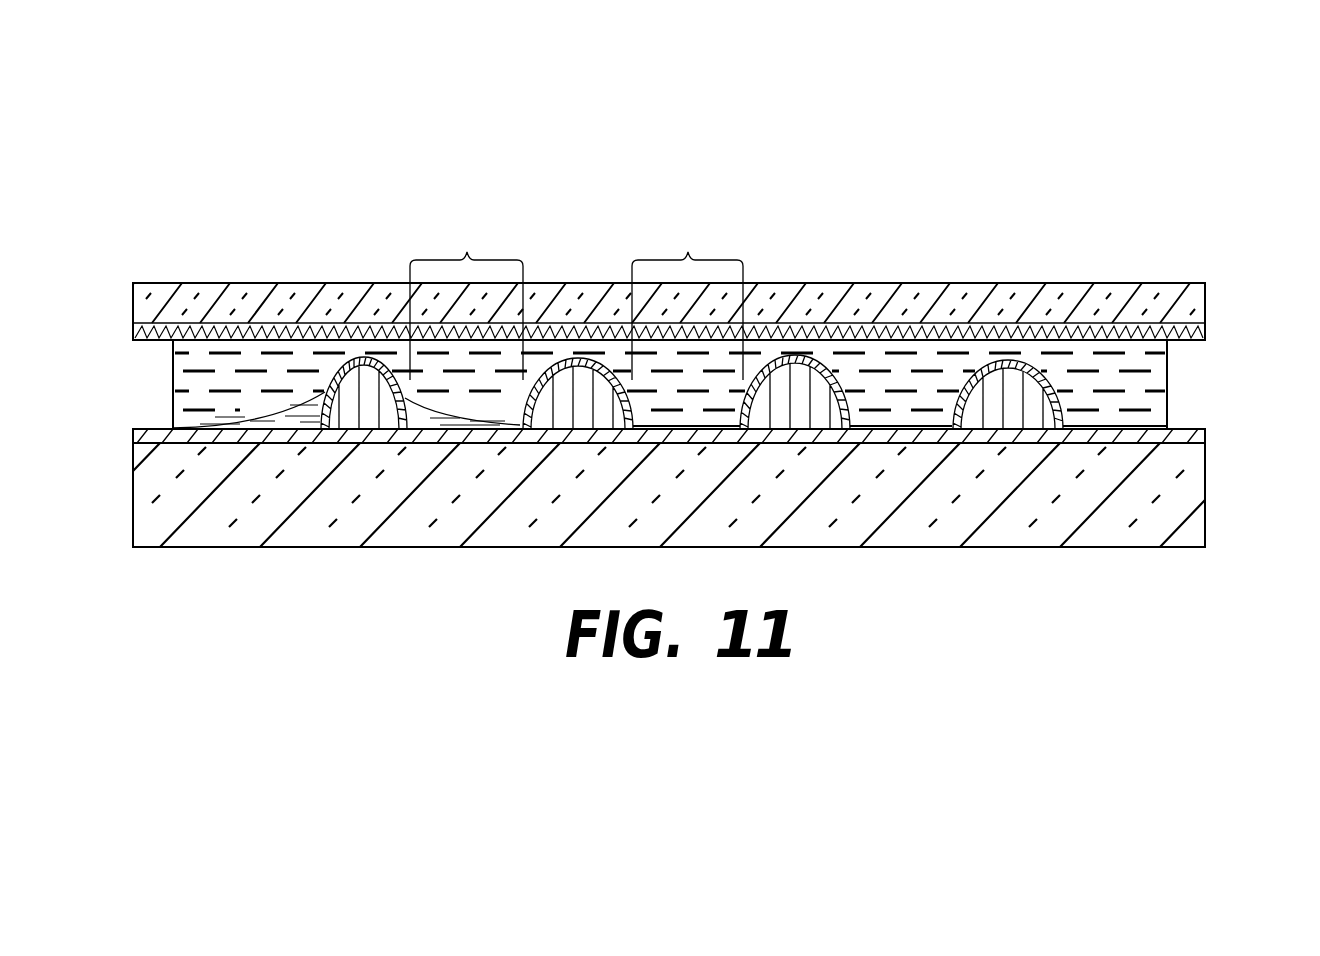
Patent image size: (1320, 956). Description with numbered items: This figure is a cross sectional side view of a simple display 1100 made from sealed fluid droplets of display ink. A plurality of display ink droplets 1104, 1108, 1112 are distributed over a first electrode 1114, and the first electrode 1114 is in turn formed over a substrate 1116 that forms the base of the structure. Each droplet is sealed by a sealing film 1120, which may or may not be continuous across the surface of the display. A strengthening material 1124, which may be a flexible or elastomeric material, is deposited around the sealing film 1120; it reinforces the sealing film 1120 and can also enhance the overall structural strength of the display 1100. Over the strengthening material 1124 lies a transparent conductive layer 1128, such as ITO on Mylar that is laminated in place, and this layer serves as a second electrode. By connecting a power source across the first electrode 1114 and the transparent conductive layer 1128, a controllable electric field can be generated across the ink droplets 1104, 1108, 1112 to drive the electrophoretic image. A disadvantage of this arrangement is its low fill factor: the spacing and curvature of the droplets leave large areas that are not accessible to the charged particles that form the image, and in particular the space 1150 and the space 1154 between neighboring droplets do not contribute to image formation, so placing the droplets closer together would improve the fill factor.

The display 1100 is at (160, 168).
The display ink droplet 1104 is at (363, 393).
The display ink droplet 1108 is at (575, 387).
The display ink droplet 1112 is at (802, 395).
The first electrode 1114 is at (1185, 427).
The substrate 1116 is at (1195, 481).
The sealing film 1120 is at (270, 411).
The strengthening material 1124 is at (195, 373).
The transparent conductive layer 1128 is at (212, 290).
The space 1150 is at (505, 241).
The space 1154 is at (725, 241).